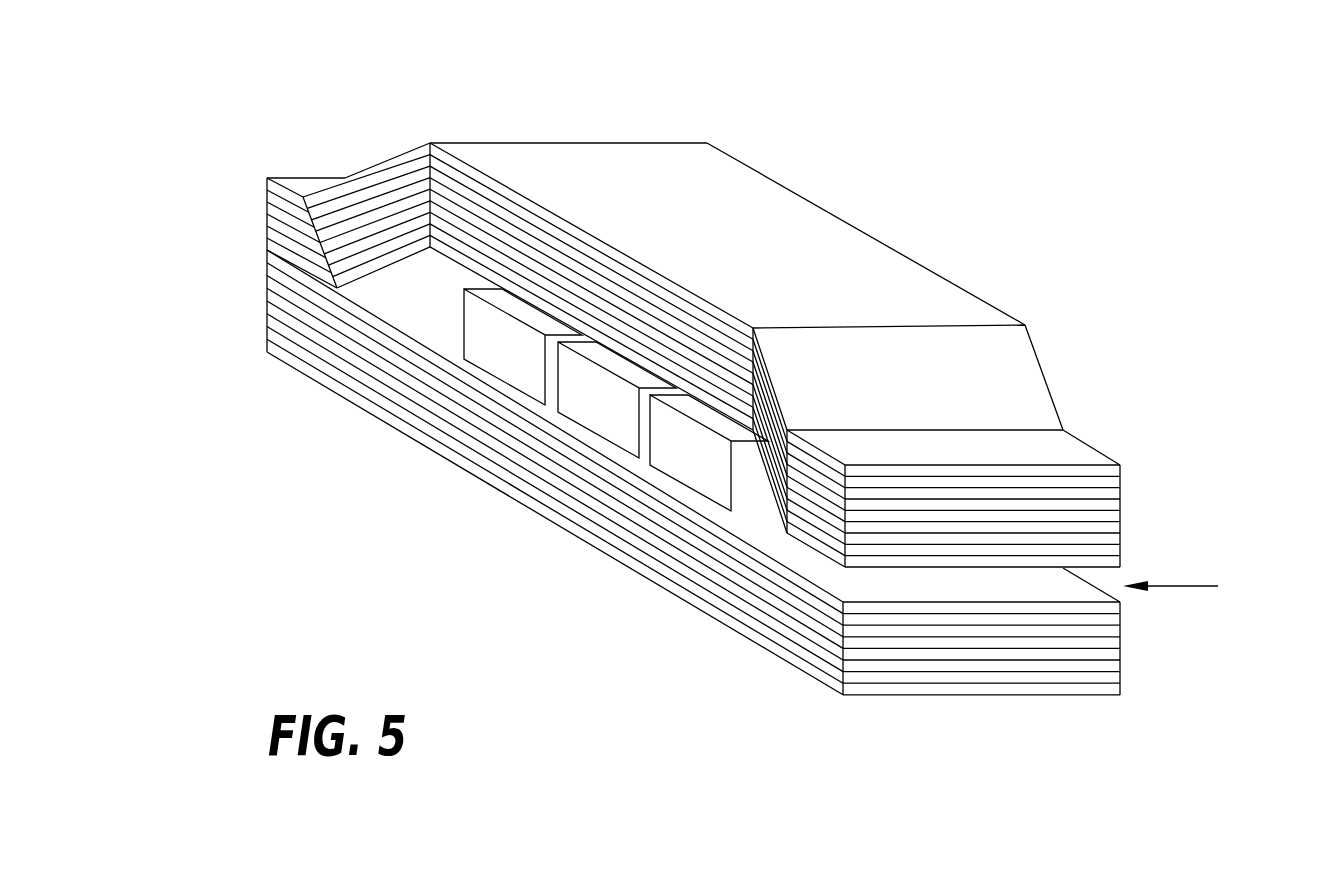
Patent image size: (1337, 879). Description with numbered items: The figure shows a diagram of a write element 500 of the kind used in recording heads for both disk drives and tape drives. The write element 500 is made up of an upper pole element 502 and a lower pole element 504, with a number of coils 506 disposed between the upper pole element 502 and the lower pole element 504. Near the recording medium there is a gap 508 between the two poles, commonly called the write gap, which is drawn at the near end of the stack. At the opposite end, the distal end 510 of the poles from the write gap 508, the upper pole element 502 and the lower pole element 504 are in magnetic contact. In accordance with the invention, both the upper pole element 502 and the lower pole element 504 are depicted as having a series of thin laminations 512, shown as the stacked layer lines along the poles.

The write element 500 is at (508, 95).
The upper pole element 502 is at (1029, 373).
The lower pole element 504 is at (812, 660).
The coils 506 is at (683, 453).
The gap 508 is at (1199, 588).
The distal end 510 is at (267, 270).
The thin laminations 512 is at (1132, 465).